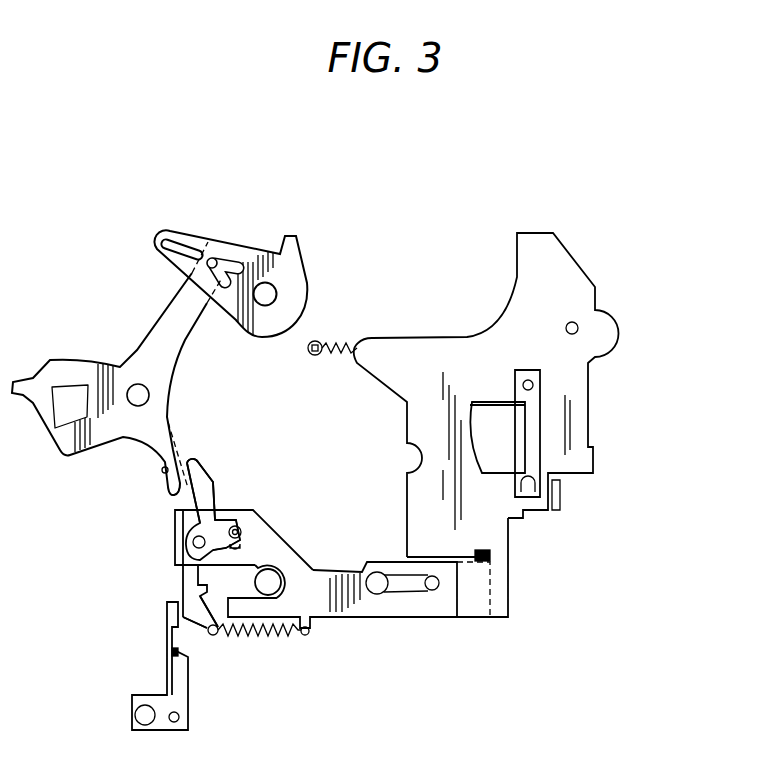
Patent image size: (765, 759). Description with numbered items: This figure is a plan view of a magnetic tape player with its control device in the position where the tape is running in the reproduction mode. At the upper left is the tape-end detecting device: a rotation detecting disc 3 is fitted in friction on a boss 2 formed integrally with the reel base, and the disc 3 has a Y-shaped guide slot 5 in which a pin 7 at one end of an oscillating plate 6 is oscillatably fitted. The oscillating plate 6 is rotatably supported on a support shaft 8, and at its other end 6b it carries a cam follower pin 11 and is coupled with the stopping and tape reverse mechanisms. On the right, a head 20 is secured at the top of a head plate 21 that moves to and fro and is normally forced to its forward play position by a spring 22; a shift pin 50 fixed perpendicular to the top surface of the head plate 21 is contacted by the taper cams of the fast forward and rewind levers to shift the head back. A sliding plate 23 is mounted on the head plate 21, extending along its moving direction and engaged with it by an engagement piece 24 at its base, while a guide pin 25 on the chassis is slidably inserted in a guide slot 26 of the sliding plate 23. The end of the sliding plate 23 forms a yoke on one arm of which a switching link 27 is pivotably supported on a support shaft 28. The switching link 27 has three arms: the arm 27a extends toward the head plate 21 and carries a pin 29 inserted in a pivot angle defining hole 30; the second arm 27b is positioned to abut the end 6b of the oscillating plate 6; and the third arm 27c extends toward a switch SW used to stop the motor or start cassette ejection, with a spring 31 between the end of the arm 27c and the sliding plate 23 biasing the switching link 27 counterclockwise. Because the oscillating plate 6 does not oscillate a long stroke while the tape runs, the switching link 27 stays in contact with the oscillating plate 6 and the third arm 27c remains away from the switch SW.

The boss 2 is at (276, 293).
The rotation detecting disc 3 is at (290, 254).
The Y-shaped guide slot 5 is at (178, 247).
The oscillating plate 6 is at (170, 322).
The other end of oscillating plate 6b is at (165, 487).
The pin 7 is at (214, 259).
The support shaft 8 is at (150, 395).
The cam follower pin 11 is at (162, 470).
The head 20 is at (515, 428).
The head plate 21 is at (417, 428).
The spring 22 is at (330, 353).
The sliding plate 23 is at (332, 582).
The engagement piece 24 is at (492, 557).
The guide pin 25 is at (431, 591).
The guide slot 26 is at (378, 594).
The switching link 27 is at (175, 553).
The first arm 27a is at (218, 533).
The second arm 27b is at (197, 466).
The third arm 27c is at (206, 636).
The support shaft 28 is at (193, 541).
The pin 29 is at (241, 531).
The pivot angle defining hole 30 is at (241, 546).
The spring 31 is at (270, 640).
The shift pin 50 is at (568, 323).
The switch SW is at (167, 648).